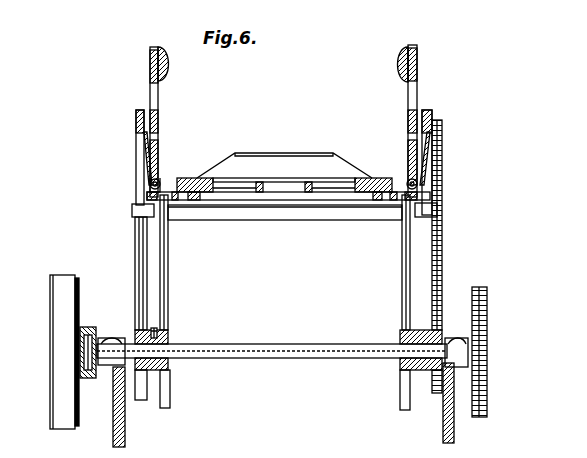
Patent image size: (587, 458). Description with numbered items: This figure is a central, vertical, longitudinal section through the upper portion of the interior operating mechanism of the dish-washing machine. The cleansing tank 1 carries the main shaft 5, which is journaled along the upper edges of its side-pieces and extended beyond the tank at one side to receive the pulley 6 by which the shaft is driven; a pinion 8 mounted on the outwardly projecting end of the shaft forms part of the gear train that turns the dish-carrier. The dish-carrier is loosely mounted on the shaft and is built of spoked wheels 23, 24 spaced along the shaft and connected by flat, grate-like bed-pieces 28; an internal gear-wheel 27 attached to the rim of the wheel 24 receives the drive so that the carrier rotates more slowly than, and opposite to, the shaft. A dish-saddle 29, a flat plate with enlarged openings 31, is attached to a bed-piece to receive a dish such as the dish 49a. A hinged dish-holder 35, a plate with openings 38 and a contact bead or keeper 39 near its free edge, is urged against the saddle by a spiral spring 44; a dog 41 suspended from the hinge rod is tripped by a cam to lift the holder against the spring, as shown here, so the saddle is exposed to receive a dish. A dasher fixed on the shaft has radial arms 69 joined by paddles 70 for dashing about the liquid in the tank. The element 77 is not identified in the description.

The cleansing tank 1 is at (443, 422).
The main shaft 5 is at (278, 352).
The pulley 6 is at (63, 397).
The pinion 8 is at (482, 287).
The spoked wheel 23 is at (137, 247).
The spoked wheel 24 is at (427, 275).
The internal gear-wheel 27 is at (442, 135).
The bed-piece 28 is at (223, 201).
The dish-saddle 29 is at (373, 177).
The enlarged openings 31 is at (272, 187).
The dish-holder 35 is at (149, 85).
The openings 38 is at (418, 97).
The contact bead or keeper 39 is at (398, 57).
The dog 41 is at (133, 198).
The spiral spring 44 is at (160, 184).
The dish 49a is at (283, 164).
The radial arms 69 is at (168, 308).
The paddles 70 is at (357, 212).
The pulley 77 is at (89, 328).